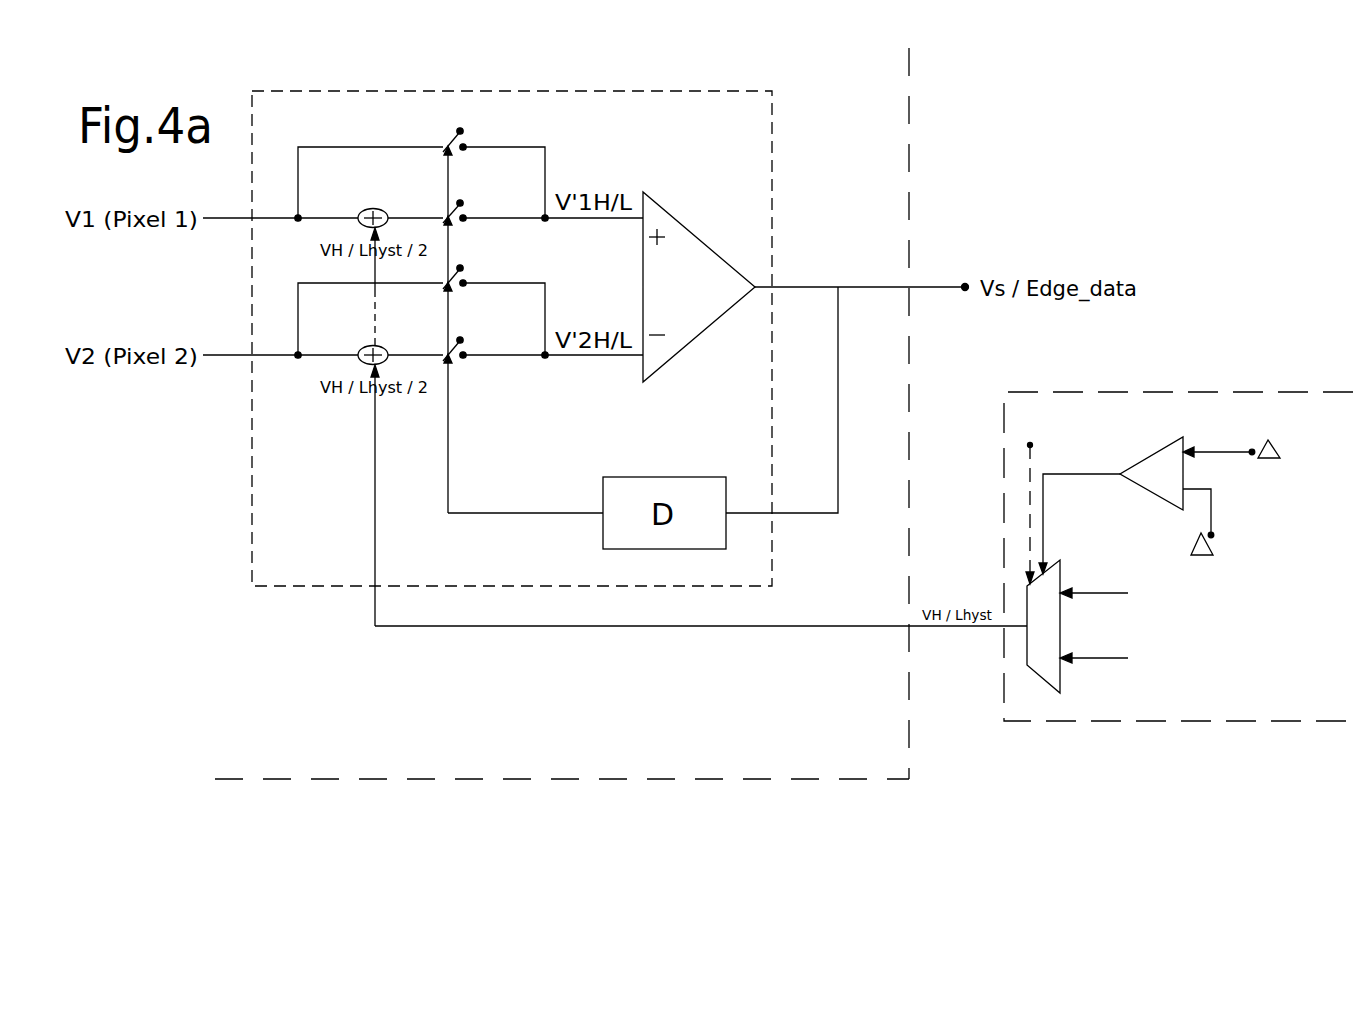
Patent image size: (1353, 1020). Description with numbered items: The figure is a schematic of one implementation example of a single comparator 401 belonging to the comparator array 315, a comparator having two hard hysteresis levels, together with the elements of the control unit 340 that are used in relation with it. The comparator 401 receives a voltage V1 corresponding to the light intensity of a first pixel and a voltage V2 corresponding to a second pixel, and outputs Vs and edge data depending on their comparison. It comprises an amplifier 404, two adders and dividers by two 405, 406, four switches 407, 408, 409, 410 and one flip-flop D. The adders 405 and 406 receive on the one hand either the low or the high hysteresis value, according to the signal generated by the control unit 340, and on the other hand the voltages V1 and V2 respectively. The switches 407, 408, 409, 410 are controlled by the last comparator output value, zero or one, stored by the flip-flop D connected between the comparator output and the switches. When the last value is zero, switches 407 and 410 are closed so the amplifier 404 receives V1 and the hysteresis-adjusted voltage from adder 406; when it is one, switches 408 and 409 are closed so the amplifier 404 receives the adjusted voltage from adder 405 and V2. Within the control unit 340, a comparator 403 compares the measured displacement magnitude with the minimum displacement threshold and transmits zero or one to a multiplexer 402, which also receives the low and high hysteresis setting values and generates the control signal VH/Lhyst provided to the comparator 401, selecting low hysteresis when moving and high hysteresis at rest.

The comparator array 315 is at (522, 752).
The control unit 340 is at (1143, 703).
The comparator 401 is at (315, 560).
The multiplexer 402 is at (1043, 682).
The comparator 403 is at (1162, 467).
The amplifier 404 is at (697, 267).
The adder and divider by two 405 is at (364, 213).
The adder and divider by two 406 is at (364, 351).
The switch 407 is at (445, 151).
The switch 408 is at (445, 222).
The switch 409 is at (445, 286).
The switch 410 is at (445, 358).